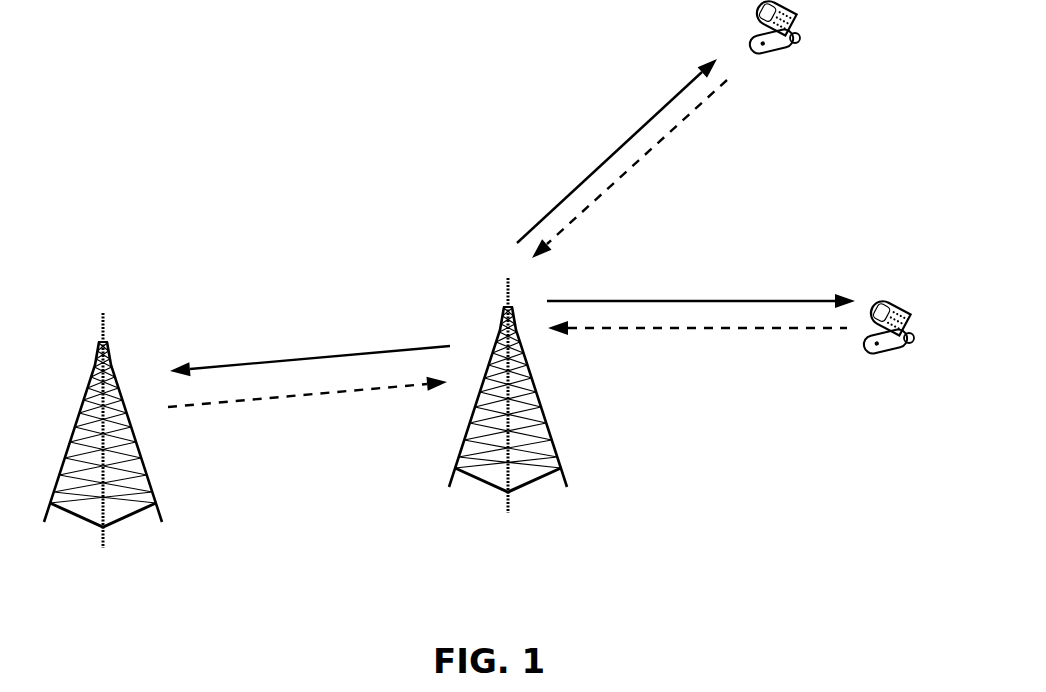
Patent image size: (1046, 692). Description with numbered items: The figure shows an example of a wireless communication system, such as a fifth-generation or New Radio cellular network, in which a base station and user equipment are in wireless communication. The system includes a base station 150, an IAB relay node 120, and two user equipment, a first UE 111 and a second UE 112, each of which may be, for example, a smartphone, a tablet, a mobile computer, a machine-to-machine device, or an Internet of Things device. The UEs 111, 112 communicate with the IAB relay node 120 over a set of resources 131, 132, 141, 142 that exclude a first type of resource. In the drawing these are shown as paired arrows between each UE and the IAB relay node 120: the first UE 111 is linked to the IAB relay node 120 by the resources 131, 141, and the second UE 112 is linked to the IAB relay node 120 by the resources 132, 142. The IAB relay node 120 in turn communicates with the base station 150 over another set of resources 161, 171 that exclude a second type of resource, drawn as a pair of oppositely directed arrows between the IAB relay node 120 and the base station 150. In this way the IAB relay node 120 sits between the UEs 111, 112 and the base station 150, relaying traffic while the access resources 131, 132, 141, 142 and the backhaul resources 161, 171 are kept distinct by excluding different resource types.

The user equipment 111 is at (793, 53).
The user equipment 112 is at (907, 348).
The IAB relay node 120 is at (555, 453).
The base station 150 is at (148, 487).
The resource 131 is at (650, 152).
The resource 132 is at (670, 330).
The resource 141 is at (652, 115).
The resource 142 is at (785, 298).
The resource 161 is at (282, 360).
The resource 171 is at (340, 390).